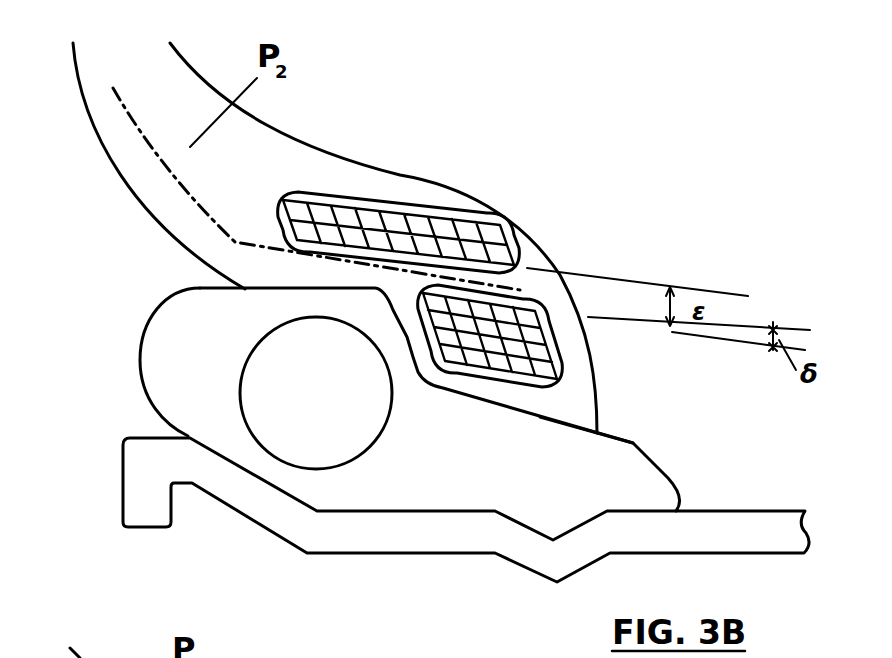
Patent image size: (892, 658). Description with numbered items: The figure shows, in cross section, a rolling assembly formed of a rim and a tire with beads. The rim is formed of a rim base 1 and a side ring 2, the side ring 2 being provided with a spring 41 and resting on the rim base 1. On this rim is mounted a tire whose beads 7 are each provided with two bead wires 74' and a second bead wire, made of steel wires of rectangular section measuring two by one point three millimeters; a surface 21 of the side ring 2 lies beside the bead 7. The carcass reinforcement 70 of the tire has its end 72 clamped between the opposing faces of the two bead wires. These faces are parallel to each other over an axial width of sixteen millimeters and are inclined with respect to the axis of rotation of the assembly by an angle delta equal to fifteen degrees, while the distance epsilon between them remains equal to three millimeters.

The rim base 1 is at (385, 525).
The side ring 2 is at (180, 373).
The bead 7 is at (527, 268).
The lower edge surface of body 21 is at (577, 425).
The spring 41 is at (290, 425).
The carcass reinforcement 70 is at (167, 185).
The end of carcass reinforcement 72 is at (323, 258).
The bead wire 74' is at (563, 337).